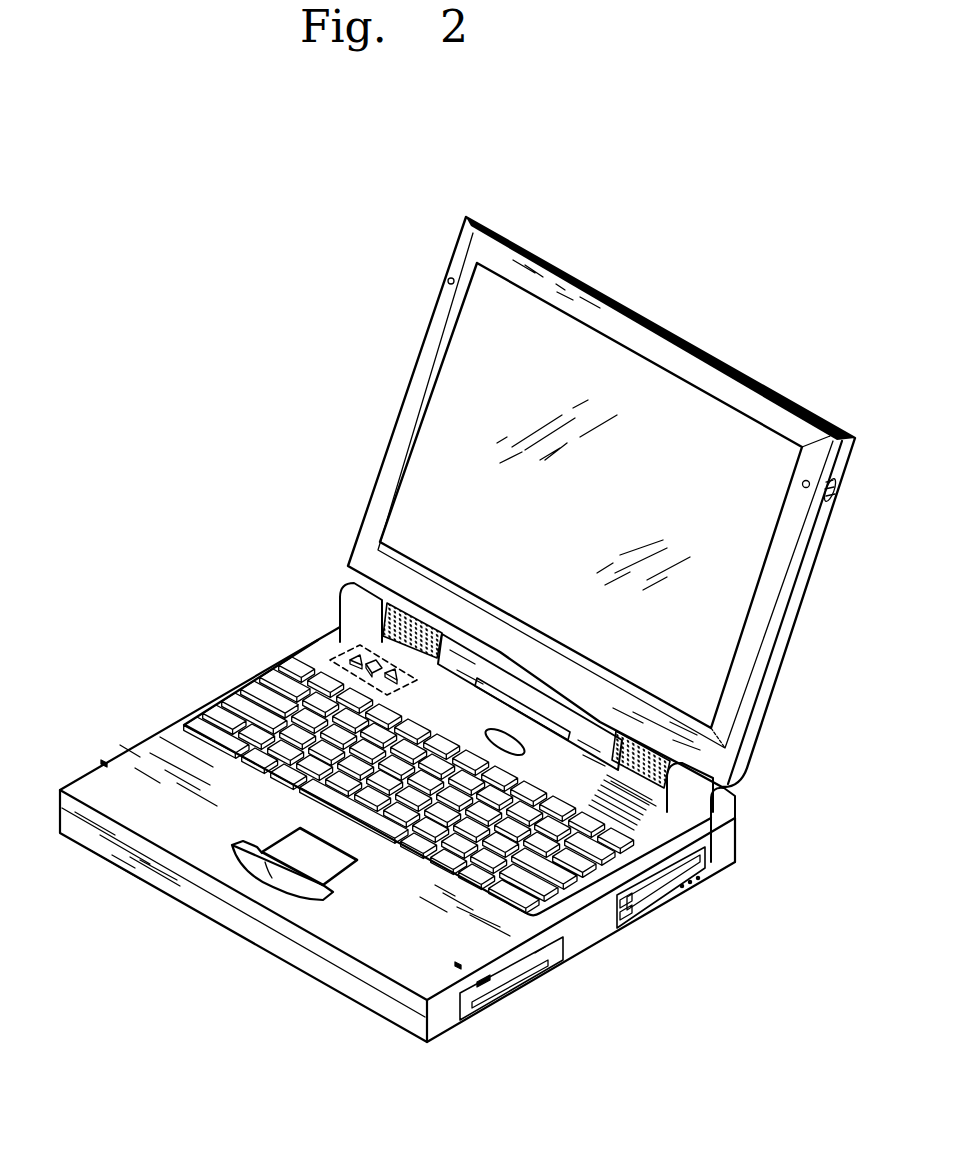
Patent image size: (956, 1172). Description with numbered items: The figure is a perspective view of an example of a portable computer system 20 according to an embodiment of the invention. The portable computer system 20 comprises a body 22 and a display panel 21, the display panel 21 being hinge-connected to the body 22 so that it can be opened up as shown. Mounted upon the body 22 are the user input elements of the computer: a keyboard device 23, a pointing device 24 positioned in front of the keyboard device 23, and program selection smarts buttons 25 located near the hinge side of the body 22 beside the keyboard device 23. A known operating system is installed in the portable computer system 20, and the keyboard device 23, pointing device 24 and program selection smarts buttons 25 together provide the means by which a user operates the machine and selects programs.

The portable computer system 20 is at (202, 525).
The display panel 21 is at (800, 600).
The body 22 is at (273, 942).
The keyboard device 23 is at (232, 712).
The pointing device 24 is at (297, 857).
The program selection smarts buttons 25 is at (337, 660).